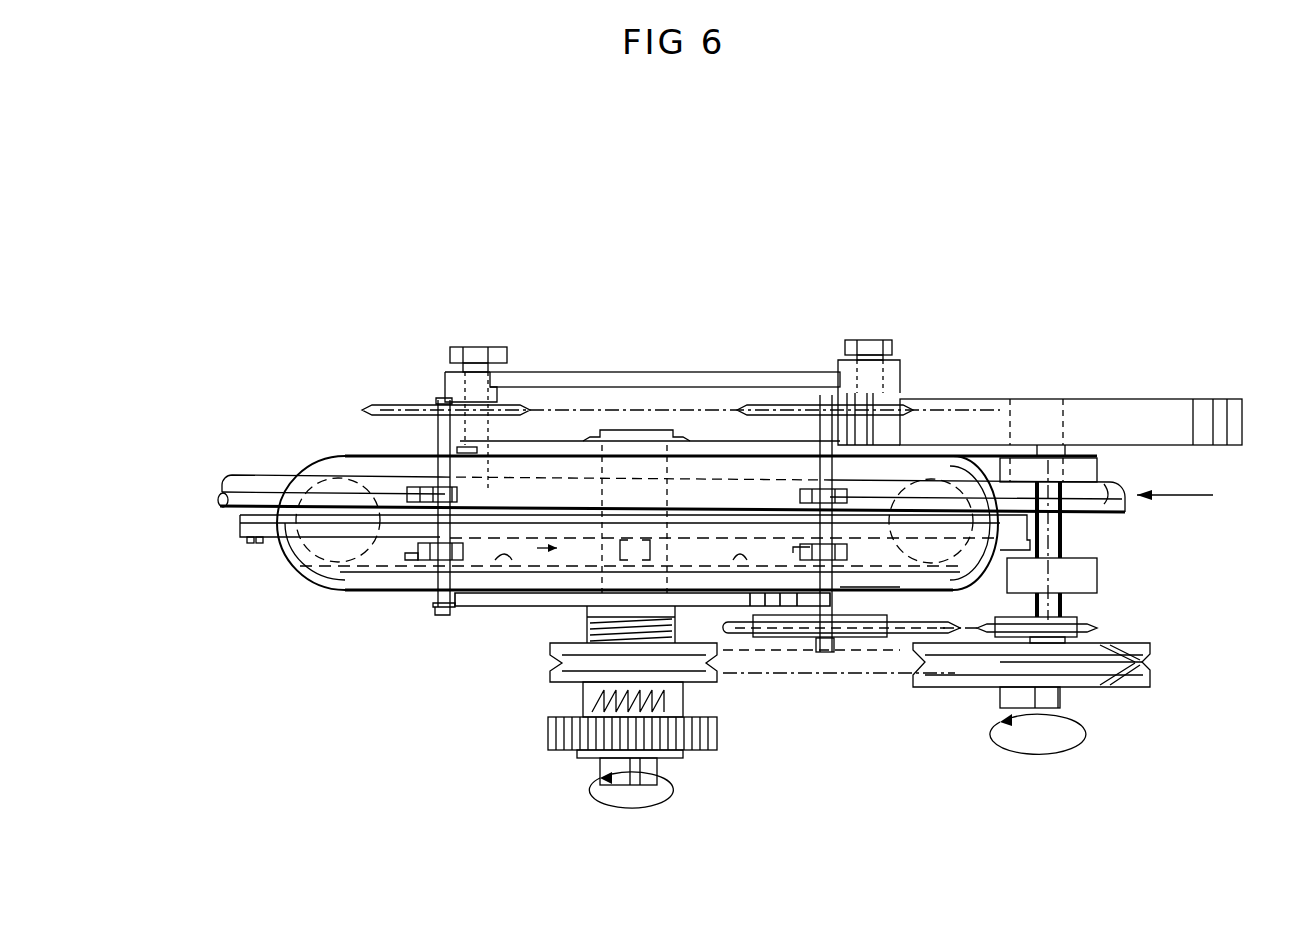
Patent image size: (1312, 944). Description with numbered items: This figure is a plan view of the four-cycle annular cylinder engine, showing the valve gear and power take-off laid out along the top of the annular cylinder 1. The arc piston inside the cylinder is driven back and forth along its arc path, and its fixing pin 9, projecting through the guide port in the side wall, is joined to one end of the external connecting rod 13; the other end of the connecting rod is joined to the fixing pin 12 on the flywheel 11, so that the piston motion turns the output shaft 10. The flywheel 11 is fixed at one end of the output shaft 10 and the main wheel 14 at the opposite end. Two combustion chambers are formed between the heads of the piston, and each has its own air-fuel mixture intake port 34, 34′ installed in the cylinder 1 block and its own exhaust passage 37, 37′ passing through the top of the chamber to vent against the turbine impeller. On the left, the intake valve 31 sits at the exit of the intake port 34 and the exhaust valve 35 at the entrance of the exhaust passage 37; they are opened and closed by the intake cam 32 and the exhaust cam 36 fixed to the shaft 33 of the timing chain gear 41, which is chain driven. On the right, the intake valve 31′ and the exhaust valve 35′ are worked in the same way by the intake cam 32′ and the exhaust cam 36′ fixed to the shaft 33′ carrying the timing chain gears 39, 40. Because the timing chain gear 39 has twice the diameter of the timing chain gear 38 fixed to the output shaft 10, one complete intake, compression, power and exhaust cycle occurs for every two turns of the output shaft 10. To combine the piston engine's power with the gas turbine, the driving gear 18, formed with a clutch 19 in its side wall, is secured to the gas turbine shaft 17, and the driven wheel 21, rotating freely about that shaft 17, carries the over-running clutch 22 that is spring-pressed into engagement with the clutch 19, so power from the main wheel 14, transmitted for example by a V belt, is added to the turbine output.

The annular cylinder 1 is at (554, 458).
The fixing pin 9 is at (472, 347).
The output shaft 10 is at (1067, 540).
The flywheel 11 is at (1105, 410).
The fixing pin 12 is at (870, 340).
The external connecting rod 13 is at (622, 377).
The main wheel 14 is at (1150, 660).
The gas turbine shaft 17 is at (628, 768).
The driving gear 18 is at (570, 718).
The clutch 19 is at (603, 693).
The driven wheel 21 is at (567, 661).
The over-running clutch 22 is at (587, 684).
The intake valve 31 is at (437, 478).
The intake valve 31′ is at (812, 490).
The intake cam 32 is at (407, 488).
The intake cam 32′ is at (800, 490).
The shaft 33 is at (432, 610).
The shaft 33′ is at (833, 652).
The air-fuel mixture intake port 34 is at (233, 483).
The air-fuel mixture intake port 34′ is at (1104, 491).
The exhaust valve 35 is at (418, 558).
The exhaust valve 35′ is at (803, 562).
The exhaust cam 36 is at (412, 556).
The exhaust cam 36′ is at (787, 562).
The exhaust passage 37 is at (502, 562).
The exhaust passage 37′ is at (735, 562).
The timing chain gear 38 is at (1073, 617).
The timing chain gear 39 is at (878, 594).
The timing chain gear 40 is at (905, 405).
The timing chain gear 41 is at (398, 405).